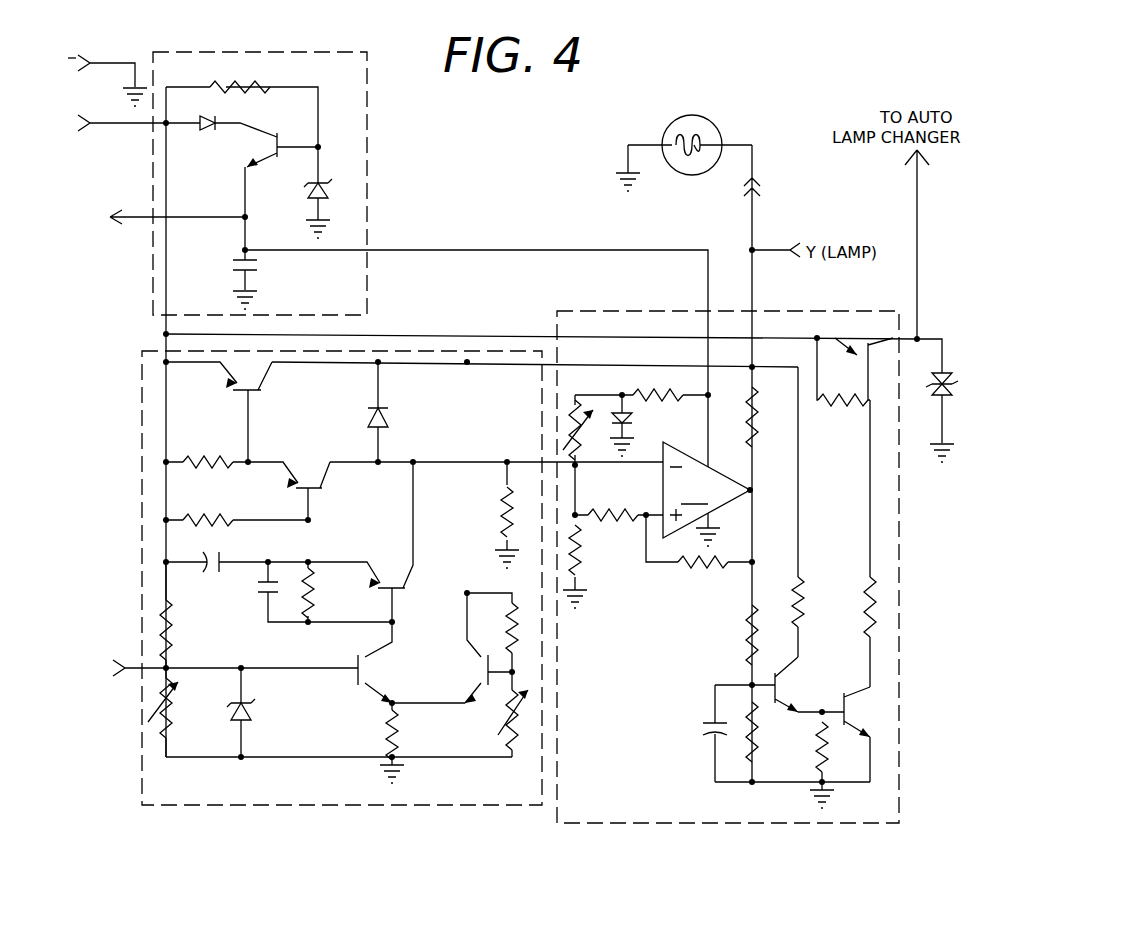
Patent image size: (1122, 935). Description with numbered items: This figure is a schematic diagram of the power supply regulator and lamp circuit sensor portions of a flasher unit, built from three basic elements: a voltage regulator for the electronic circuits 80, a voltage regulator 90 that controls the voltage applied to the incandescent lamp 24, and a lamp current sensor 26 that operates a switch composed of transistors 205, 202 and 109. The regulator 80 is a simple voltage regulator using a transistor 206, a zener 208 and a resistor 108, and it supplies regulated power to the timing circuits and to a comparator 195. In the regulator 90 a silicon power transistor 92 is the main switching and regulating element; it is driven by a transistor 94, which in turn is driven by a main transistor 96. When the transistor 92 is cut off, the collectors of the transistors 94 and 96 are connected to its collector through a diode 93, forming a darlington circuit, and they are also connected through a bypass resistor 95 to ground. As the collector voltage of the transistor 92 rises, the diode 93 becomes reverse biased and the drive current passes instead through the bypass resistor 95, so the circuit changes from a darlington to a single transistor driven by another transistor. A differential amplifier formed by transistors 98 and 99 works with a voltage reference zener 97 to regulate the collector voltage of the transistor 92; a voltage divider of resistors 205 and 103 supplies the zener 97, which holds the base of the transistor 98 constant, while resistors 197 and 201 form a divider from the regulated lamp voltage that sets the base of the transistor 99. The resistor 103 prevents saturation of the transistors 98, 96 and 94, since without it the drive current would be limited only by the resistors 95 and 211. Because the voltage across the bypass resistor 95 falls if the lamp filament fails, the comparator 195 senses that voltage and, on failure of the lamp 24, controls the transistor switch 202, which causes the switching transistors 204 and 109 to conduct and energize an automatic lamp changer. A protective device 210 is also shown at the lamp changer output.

The incandescent lamp 24 is at (680, 165).
The lamp current sensor 26 is at (661, 609).
The voltage regulator for the electronic circuits 80 is at (367, 186).
The voltage regulator 90 is at (140, 446).
The silicon power transistor 92 is at (256, 395).
The diode 93 is at (390, 418).
The transistor 94 is at (320, 499).
The bypass resistor 95 is at (505, 501).
The main transistor 96 is at (393, 592).
The voltage reference zener 97 is at (252, 712).
The differential amplifier transistor 98 is at (372, 669).
The differential amplifier transistor 99 is at (477, 676).
The resistor 103 is at (178, 728).
The resistor 108 is at (260, 75).
The switching transistor 109 is at (868, 334).
The comparator 195 is at (706, 494).
The resistor 197 is at (512, 629).
The resistor 201 is at (545, 729).
The transistor switch 202 is at (785, 689).
The switching transistor 204 is at (860, 717).
The resistor 205 is at (167, 612).
The transistor 206 is at (260, 151).
The zener 208 is at (302, 197).
The transient suppressor diode 210 is at (948, 369).
The resistor 211 is at (395, 730).